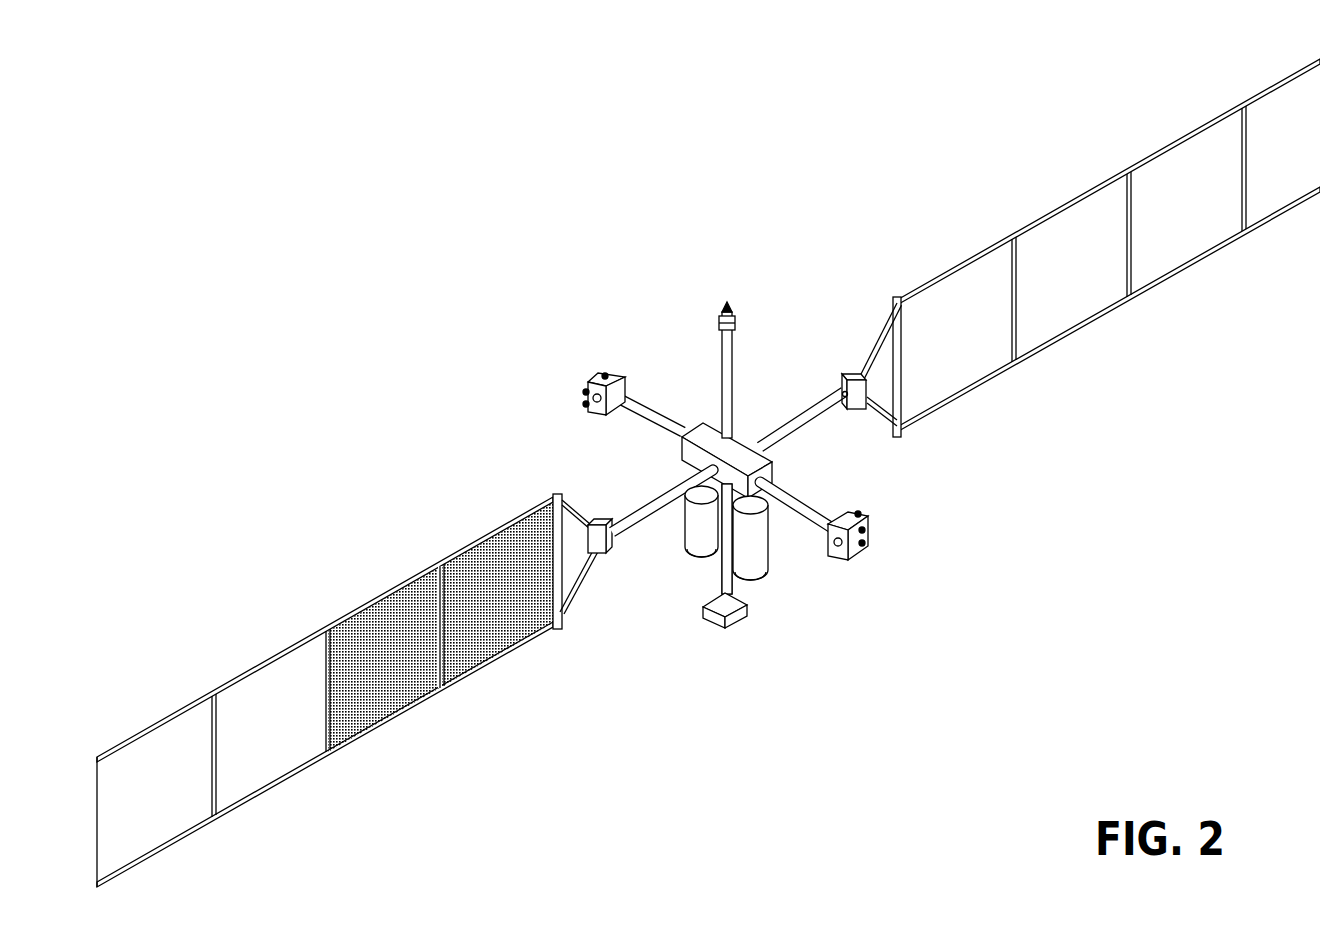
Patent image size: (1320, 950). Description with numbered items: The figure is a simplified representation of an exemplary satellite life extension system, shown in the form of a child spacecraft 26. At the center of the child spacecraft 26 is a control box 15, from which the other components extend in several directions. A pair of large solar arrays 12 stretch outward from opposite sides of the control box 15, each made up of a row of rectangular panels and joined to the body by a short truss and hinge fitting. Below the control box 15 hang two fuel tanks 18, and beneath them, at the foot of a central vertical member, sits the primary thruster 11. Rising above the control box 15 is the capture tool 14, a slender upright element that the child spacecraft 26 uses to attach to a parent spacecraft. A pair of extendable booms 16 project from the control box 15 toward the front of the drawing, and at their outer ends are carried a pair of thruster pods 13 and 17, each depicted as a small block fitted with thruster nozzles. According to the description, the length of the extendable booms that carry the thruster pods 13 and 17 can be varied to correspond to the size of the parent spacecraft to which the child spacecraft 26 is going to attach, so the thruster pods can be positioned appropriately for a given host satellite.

The child spacecraft 26 is at (535, 325).
The primary thruster 11 is at (700, 606).
The solar arrays 12 is at (554, 492).
The thruster pod 13 is at (579, 388).
The capture tool 14 is at (723, 303).
The control box 15 is at (703, 421).
The extendable booms 16 is at (639, 423).
The thruster pod 17 is at (875, 542).
The fuel tanks 18 is at (681, 520).